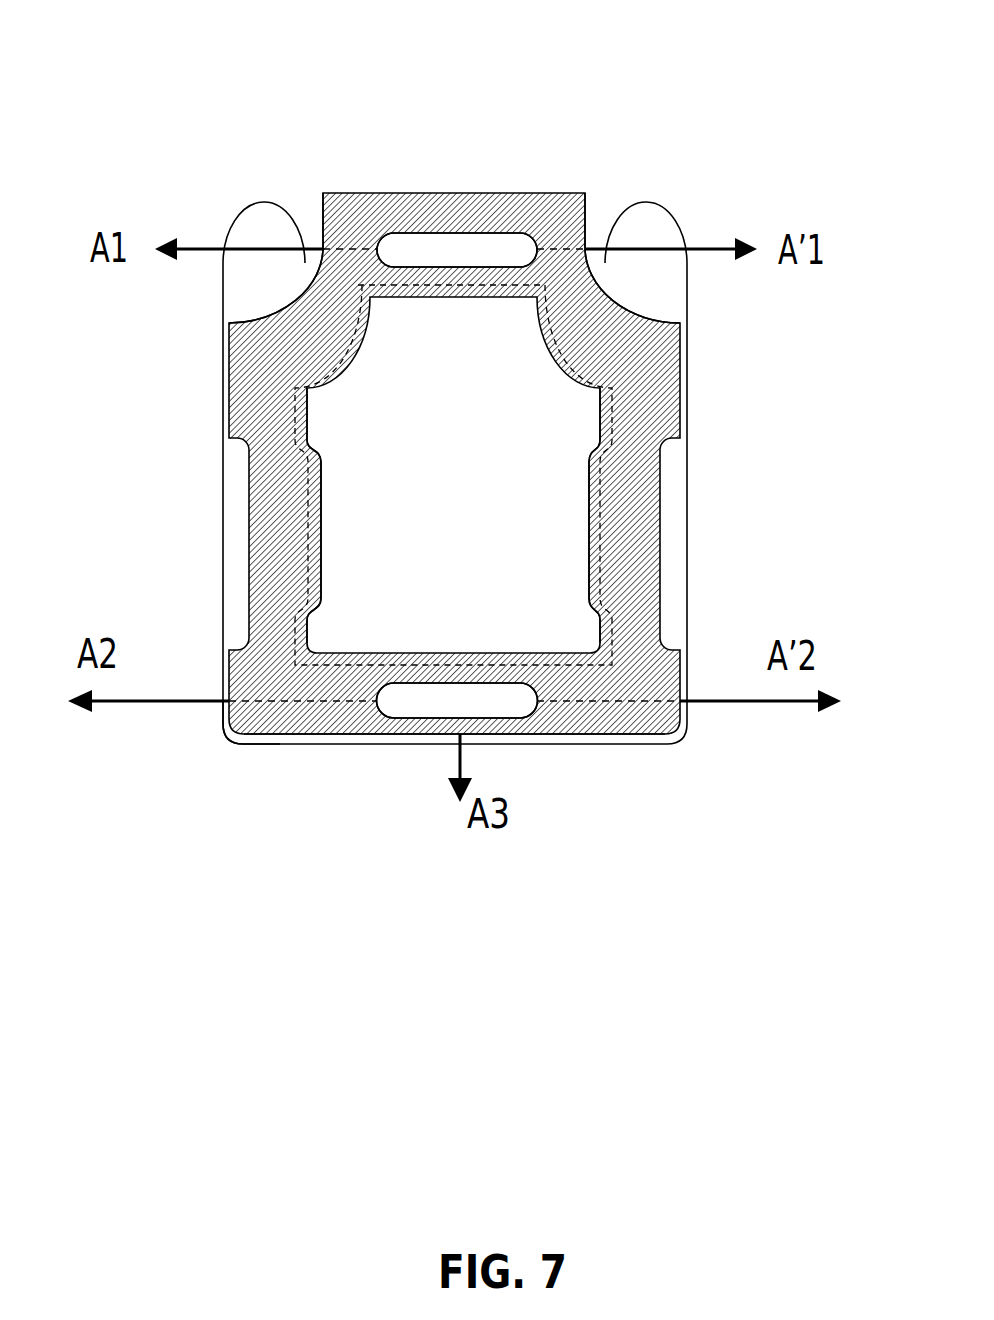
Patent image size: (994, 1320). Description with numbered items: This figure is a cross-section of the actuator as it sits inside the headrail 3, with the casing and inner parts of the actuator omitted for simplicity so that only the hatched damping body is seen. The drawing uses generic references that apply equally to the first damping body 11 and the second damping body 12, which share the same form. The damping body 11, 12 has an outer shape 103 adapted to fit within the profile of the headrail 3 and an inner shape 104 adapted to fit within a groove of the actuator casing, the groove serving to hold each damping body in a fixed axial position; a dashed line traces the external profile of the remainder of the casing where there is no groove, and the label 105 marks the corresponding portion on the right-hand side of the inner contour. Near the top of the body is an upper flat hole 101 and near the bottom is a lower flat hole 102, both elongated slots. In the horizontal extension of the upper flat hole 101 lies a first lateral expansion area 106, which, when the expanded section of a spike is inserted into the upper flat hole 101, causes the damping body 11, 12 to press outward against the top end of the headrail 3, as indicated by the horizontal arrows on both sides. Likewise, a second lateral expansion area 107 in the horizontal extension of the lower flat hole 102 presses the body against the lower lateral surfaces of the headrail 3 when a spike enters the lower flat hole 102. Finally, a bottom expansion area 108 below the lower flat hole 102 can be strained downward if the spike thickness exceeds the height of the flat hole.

The headrail 3 is at (687, 473).
The first damping body 11 is at (454, 367).
The second damping body 12 is at (401, 152).
The upper flat hole 101 is at (497, 252).
The lower flat hole 102 is at (405, 702).
The outer shape 103 is at (585, 193).
The inner shape 104 is at (303, 391).
The right inner wall 105 is at (613, 408).
The first lateral expansion area 106 is at (320, 248).
The second lateral expansion area 107 is at (228, 735).
The bottom expansion area 108 is at (460, 728).